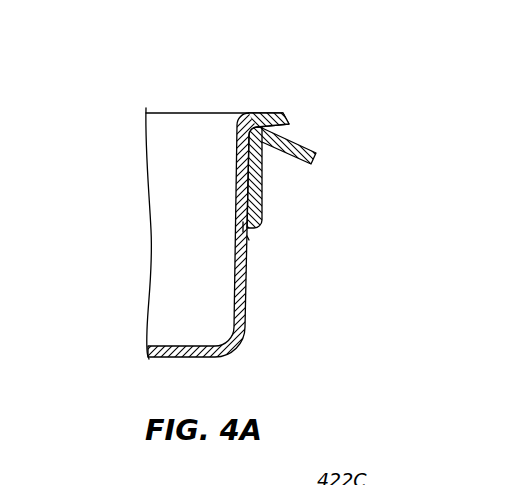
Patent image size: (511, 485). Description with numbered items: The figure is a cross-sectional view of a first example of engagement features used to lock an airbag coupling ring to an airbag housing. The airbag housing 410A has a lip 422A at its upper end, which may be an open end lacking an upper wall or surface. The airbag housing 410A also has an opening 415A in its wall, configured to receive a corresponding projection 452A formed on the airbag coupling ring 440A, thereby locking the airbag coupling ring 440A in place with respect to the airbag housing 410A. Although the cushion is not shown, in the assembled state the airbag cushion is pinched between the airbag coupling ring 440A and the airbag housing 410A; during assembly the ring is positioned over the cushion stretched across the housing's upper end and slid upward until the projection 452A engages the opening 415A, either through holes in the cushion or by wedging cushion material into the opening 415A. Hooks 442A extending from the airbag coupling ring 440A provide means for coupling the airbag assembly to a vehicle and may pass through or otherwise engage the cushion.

The airbag housing 410A is at (241, 308).
The opening 415A is at (256, 241).
The lip 422A is at (268, 113).
The airbag coupling ring 440A is at (262, 183).
The hooks 442A is at (306, 147).
The projection 452A is at (243, 227).